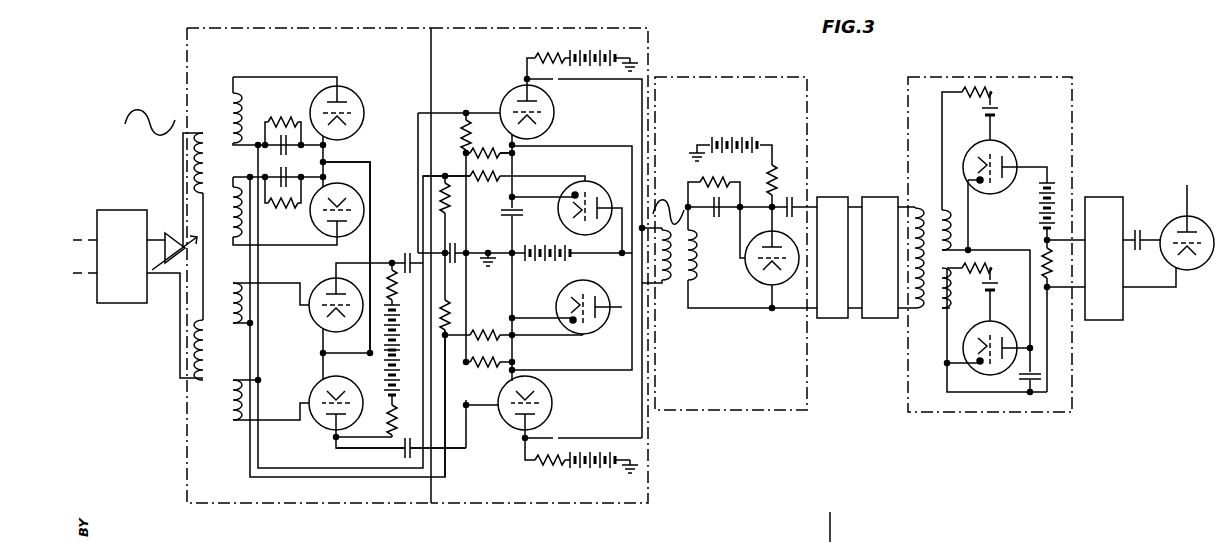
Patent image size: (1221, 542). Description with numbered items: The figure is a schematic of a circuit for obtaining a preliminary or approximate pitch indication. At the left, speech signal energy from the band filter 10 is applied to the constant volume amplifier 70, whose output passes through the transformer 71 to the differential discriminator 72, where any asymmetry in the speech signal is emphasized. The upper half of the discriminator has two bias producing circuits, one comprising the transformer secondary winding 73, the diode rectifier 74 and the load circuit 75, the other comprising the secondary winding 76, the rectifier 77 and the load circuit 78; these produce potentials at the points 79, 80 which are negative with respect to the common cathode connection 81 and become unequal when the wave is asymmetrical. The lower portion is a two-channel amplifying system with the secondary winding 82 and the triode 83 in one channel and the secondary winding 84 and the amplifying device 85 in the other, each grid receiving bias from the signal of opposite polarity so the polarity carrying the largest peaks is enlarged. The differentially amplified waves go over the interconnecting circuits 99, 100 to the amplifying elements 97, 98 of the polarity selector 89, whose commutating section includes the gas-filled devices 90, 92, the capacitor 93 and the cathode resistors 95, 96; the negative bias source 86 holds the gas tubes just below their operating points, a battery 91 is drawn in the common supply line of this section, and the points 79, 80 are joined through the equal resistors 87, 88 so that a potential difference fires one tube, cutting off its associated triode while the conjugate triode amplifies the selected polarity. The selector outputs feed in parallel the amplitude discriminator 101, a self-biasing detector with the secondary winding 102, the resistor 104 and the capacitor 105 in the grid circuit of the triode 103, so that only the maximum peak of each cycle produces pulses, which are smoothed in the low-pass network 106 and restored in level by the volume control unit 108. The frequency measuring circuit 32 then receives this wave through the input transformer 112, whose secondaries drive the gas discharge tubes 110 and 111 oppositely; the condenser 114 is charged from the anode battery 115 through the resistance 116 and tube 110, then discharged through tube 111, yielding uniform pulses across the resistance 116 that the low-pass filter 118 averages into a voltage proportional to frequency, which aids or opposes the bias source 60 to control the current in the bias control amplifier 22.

The band filter 10 is at (137, 90).
The constant volume amplifier 70 is at (178, 234).
The transformer 71 is at (220, 150).
The differential discriminator 72 is at (392, 30).
The transformer secondary winding 73 is at (243, 104).
The diode electron discharge device 74 is at (364, 106).
The load circuit 75 is at (297, 120).
The secondary winding 76 is at (245, 240).
The diode electron discharge device 77 is at (318, 228).
The load circuit 78 is at (273, 206).
The potential point 79 is at (275, 136).
The potential point 80 is at (258, 176).
The common cathode connection 81 is at (372, 167).
The secondary winding 82 is at (240, 323).
The triode electron discharge device 83 is at (318, 282).
The secondary winding 84 is at (236, 422).
The amplifying device 85 is at (313, 390).
The negative bias source 86 is at (456, 248).
The resistor 87 is at (455, 190).
The resistor 88 is at (452, 305).
The polarity selector 89 is at (515, 30).
The gas-filled electron discharge device 90 is at (610, 184).
The battery 91 is at (560, 266).
The gas-filled electron discharge device 92 is at (596, 330).
The capacitor 93 is at (505, 208).
The cathode resistor 95 is at (498, 148).
The cathode resistor 96 is at (500, 358).
The amplifying element 97 is at (555, 108).
The amplifying element 98 is at (553, 403).
The interconnecting circuit 99 is at (460, 112).
The interconnecting circuit 100 is at (460, 450).
The amplitude discriminator 101 is at (752, 80).
The transformer secondary winding 102 is at (700, 258).
The triode electron discharge device 103 is at (757, 280).
The resistor 104 is at (700, 182).
The capacitor 105 is at (718, 218).
The low-pass network 106 is at (833, 196).
The volume control unit 108 is at (880, 320).
The gas discharge tube 110 is at (1008, 152).
The gas discharge tube 111 is at (984, 372).
The input transformer 112 is at (936, 215).
The condenser 114 is at (1045, 375).
The anode battery 115 is at (1038, 203).
The resistance 116 is at (1040, 272).
The low-pass filter 118 is at (1103, 197).
The bias source 60 is at (1138, 228).
The bias control amplifier 22 is at (1188, 274).
The frequency measuring circuit 32 is at (1040, 82).